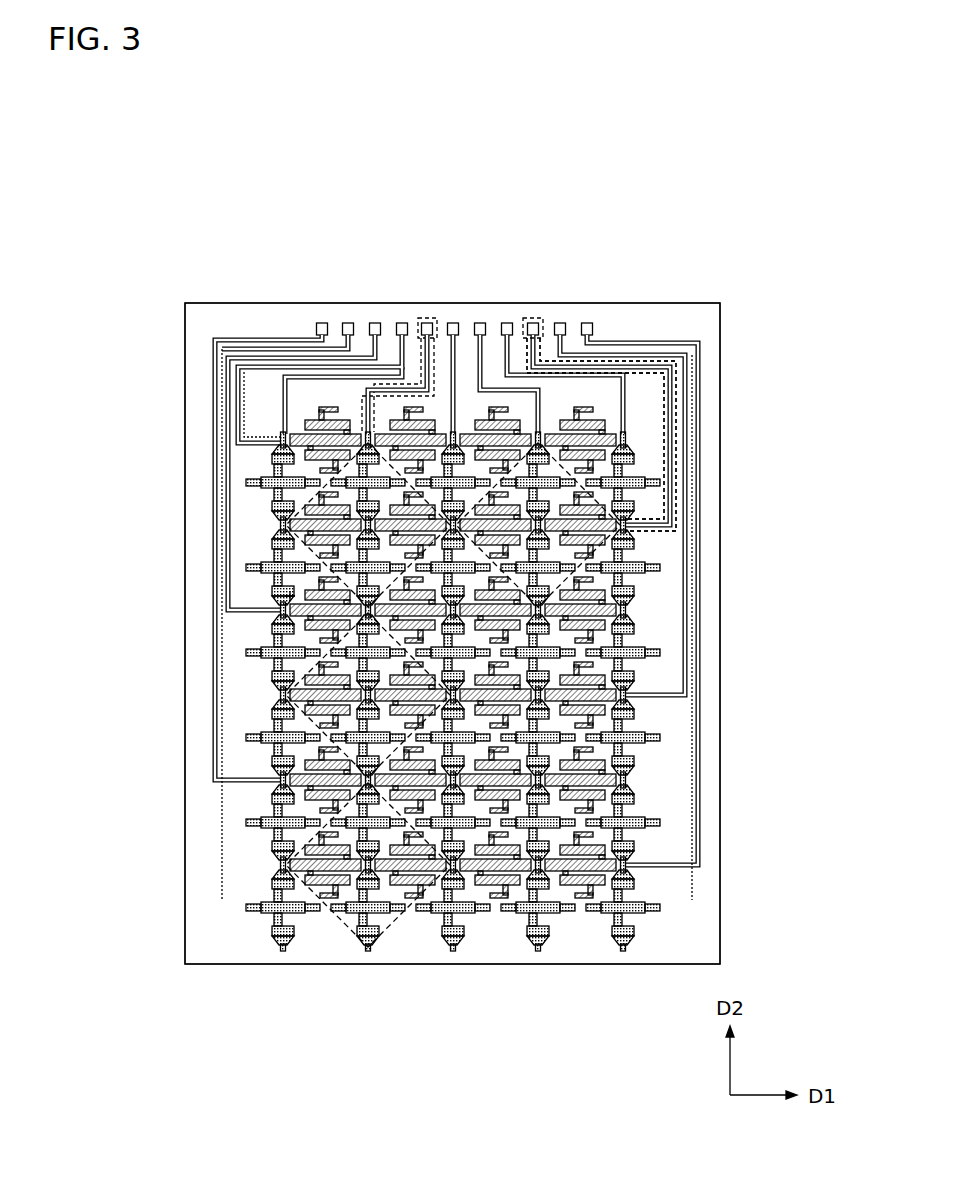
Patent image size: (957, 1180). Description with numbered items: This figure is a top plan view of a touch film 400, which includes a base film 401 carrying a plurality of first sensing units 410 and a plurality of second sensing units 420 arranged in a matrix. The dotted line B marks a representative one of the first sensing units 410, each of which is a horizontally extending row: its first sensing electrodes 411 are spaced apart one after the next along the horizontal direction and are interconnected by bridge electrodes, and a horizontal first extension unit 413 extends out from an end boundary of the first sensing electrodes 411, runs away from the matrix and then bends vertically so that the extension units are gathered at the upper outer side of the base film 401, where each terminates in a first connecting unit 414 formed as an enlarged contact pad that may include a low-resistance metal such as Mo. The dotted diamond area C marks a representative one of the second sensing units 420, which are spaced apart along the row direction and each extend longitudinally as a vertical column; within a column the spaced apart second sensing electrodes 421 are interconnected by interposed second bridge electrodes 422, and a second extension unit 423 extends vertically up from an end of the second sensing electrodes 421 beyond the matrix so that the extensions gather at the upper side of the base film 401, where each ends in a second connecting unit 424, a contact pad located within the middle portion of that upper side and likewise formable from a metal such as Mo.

The touch film 400 is at (720, 180).
The base film 401 is at (203, 862).
The first sensing units 410 is at (507, 222).
The first sensing electrodes 411 is at (505, 507).
The first extension unit 413 is at (656, 527).
The first connecting unit 414 is at (537, 322).
The second sensing units 420 is at (408, 222).
The second sensing electrodes 421 is at (363, 470).
The second bridge electrodes 422 is at (368, 527).
The second extension unit 423 is at (368, 428).
The second connecting unit 424 is at (426, 322).
The dotted line region B is at (676, 545).
The dotted diamond area C is at (286, 595).